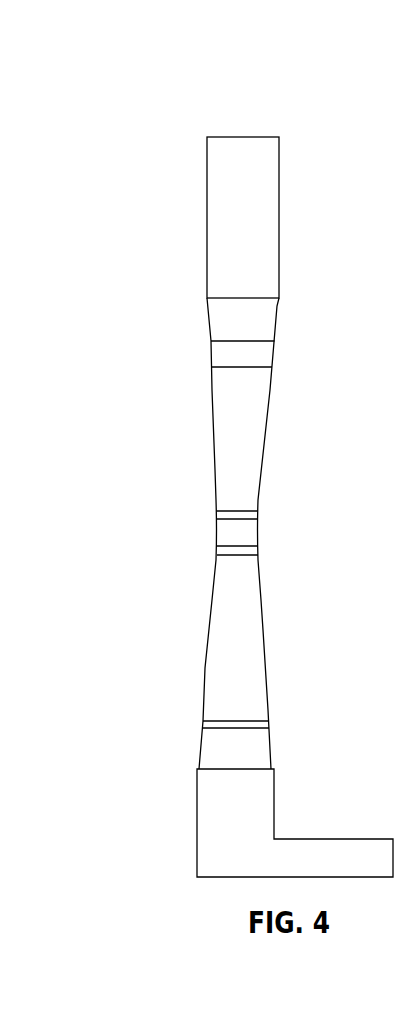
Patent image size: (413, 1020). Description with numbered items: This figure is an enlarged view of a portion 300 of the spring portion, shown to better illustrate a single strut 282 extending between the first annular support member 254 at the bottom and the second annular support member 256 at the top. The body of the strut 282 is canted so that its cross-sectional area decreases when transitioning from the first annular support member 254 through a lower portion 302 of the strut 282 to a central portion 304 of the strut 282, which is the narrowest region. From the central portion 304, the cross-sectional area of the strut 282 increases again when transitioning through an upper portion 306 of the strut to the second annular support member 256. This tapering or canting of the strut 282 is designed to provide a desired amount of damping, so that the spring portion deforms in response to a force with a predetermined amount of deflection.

The portion 300 is at (153, 88).
The second annular support member 256 is at (207, 195).
The strut 282 is at (259, 580).
The upper portion 306 is at (212, 418).
The central portion 304 is at (222, 534).
The lower portion 302 is at (205, 668).
The first annular support member 254 is at (205, 857).